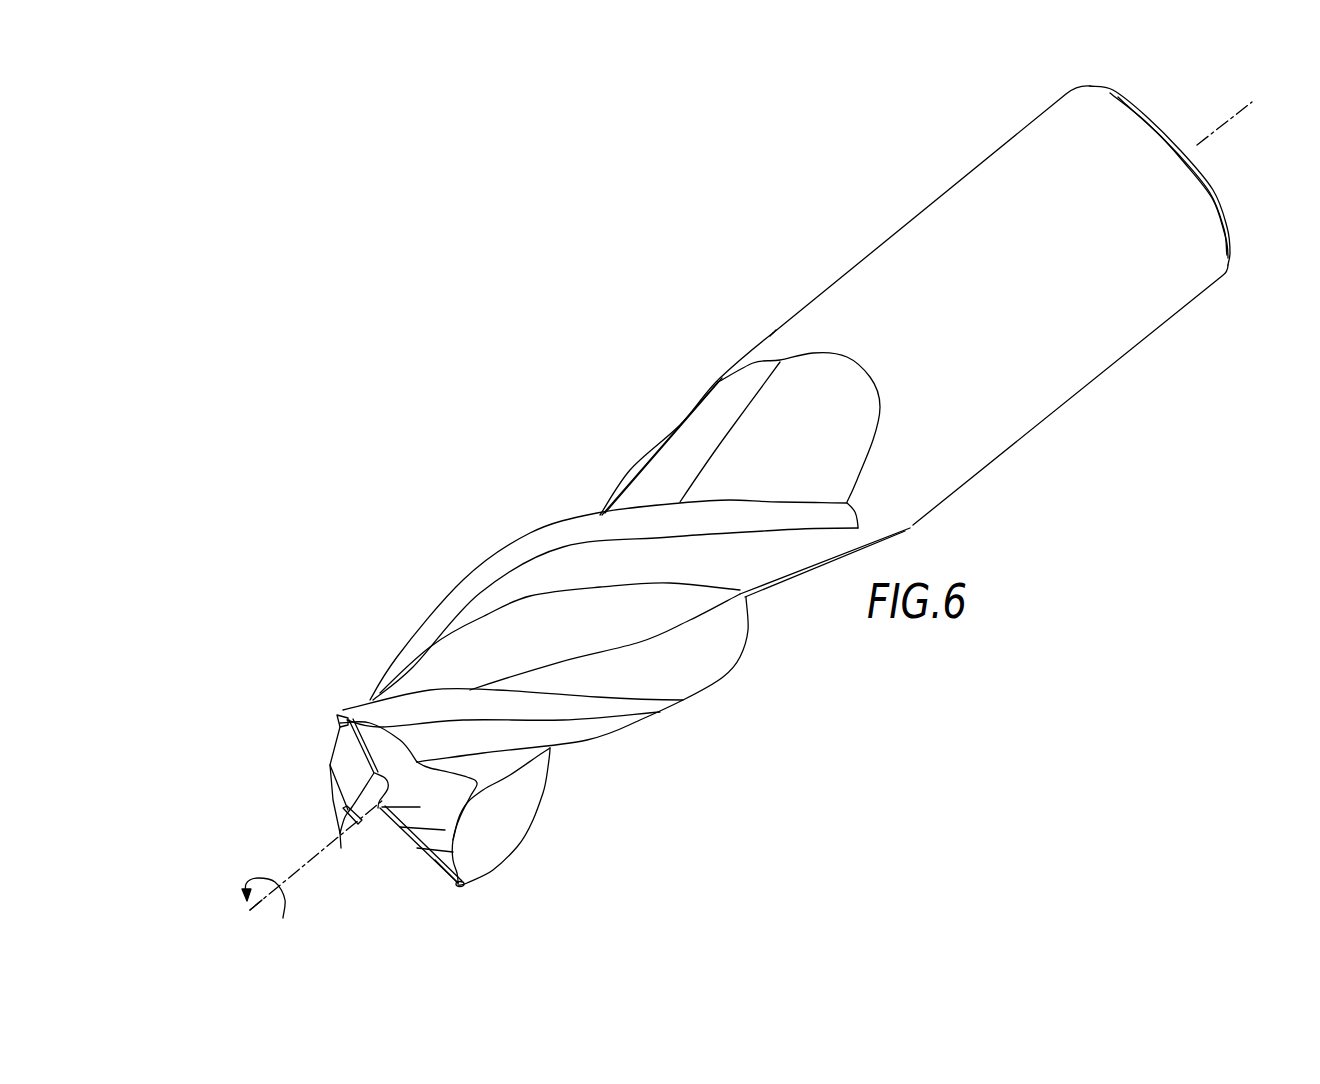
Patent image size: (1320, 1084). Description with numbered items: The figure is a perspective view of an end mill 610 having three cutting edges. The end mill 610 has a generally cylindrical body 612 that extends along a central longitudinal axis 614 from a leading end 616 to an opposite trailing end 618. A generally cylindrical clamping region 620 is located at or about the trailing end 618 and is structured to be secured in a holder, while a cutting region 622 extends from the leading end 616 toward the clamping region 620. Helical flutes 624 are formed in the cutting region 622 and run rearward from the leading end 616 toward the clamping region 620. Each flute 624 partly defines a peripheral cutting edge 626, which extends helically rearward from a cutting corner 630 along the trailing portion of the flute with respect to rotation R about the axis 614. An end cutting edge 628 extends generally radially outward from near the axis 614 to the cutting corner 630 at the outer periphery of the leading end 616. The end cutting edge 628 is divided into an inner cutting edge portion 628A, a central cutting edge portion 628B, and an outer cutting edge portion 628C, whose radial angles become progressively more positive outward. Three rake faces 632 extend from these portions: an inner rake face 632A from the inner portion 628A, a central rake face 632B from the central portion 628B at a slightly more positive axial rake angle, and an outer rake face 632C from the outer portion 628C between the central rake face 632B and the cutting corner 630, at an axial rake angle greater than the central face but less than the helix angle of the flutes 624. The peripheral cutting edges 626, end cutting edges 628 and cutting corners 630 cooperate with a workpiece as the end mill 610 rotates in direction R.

The end mill 610 is at (762, 228).
The body 612 is at (1047, 402).
The central longitudinal axis 614 is at (313, 863).
The leading end 616 is at (240, 912).
The trailing end 618 is at (1140, 92).
The clamping region 620 is at (893, 178).
The cutting region 622 is at (677, 730).
The flutes 624 is at (612, 470).
The peripheral cutting edge 626 is at (583, 517).
The end cutting edge 628 is at (337, 740).
The inner cutting edge portion 628A is at (383, 800).
The central cutting edge portion 628B is at (406, 840).
The outer cutting edge portion 628C is at (435, 873).
The cutting corner 630 is at (337, 714).
The rake faces 632 is at (595, 775).
The inner rake face 632A is at (423, 812).
The central rake face 632B is at (453, 832).
The outer rake face 632C is at (443, 862).
The rotation direction R is at (263, 879).